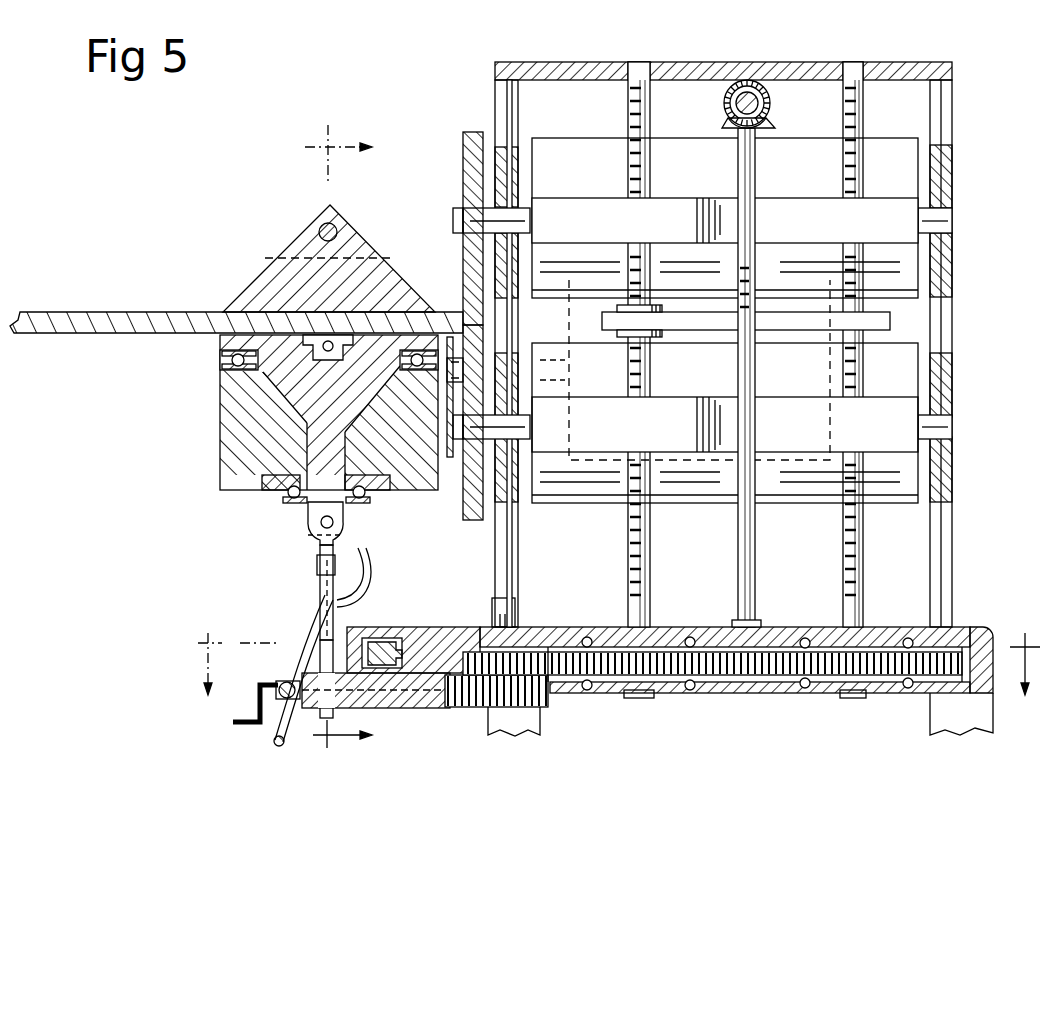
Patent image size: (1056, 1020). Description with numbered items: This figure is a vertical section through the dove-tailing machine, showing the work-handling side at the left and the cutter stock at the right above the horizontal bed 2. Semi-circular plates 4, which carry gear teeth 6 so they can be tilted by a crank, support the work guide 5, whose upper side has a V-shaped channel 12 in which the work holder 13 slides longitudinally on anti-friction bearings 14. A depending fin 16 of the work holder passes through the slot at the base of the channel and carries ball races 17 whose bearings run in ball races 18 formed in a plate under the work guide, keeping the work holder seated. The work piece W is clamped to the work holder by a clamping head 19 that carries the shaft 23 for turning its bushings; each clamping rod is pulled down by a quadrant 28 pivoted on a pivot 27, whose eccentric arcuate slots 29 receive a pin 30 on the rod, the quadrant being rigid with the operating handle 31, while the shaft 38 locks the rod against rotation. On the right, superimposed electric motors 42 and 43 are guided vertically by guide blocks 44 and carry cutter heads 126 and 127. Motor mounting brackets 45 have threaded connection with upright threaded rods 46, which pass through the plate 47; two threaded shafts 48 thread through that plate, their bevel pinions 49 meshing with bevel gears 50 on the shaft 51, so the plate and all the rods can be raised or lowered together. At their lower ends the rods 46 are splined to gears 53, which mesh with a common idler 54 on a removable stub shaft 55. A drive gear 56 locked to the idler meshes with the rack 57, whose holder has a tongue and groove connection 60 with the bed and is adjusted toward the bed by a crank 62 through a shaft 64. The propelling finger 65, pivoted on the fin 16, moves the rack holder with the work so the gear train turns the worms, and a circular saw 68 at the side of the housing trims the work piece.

The work piece W is at (60, 312).
The horizontal bed 2 is at (568, 628).
The semi-circular plates 4 is at (616, 678).
The work guide 5 is at (220, 410).
The gear teeth 6 is at (347, 437).
The V-shaped channel 12 is at (313, 453).
The work holder 13 is at (270, 378).
The anti-friction bearings 14 is at (232, 362).
The depending fin 16 is at (312, 452).
The ball races 17 is at (286, 503).
The ball races 18 is at (272, 490).
The clamping head 19 is at (262, 275).
The shaft 23 is at (318, 229).
The pivot 27 is at (317, 558).
The quadrant 28 is at (345, 522).
The arcuate slots 29 is at (360, 566).
The pin 30 is at (322, 600).
The operating handle 31 is at (320, 660).
The shaft 38 is at (331, 344).
The electric motor 42 is at (725, 218).
The electric motor 43 is at (725, 423).
The guide blocks 44 is at (497, 150).
The motor mounting bracket 45 is at (725, 325).
The upright threaded rods 46 is at (650, 125).
The plate 47 is at (890, 323).
The threaded shafts 48 is at (756, 155).
The bevel pinions 49 is at (728, 120).
The bevel gears 50 is at (757, 95).
The shaft 51 is at (747, 80).
The gear 53 is at (622, 680).
The idler 54 is at (440, 660).
The removable stub shaft 55 is at (497, 615).
The drive gear 56 is at (481, 708).
The rack 57 is at (446, 700).
The tongue and groove connection 60 is at (378, 636).
The crank 62 is at (258, 712).
The shaft 64 is at (283, 682).
The propelling finger 65 is at (318, 640).
The circular saw 68 is at (455, 356).
The cutter head 126 is at (463, 195).
The cutter head 127 is at (473, 520).